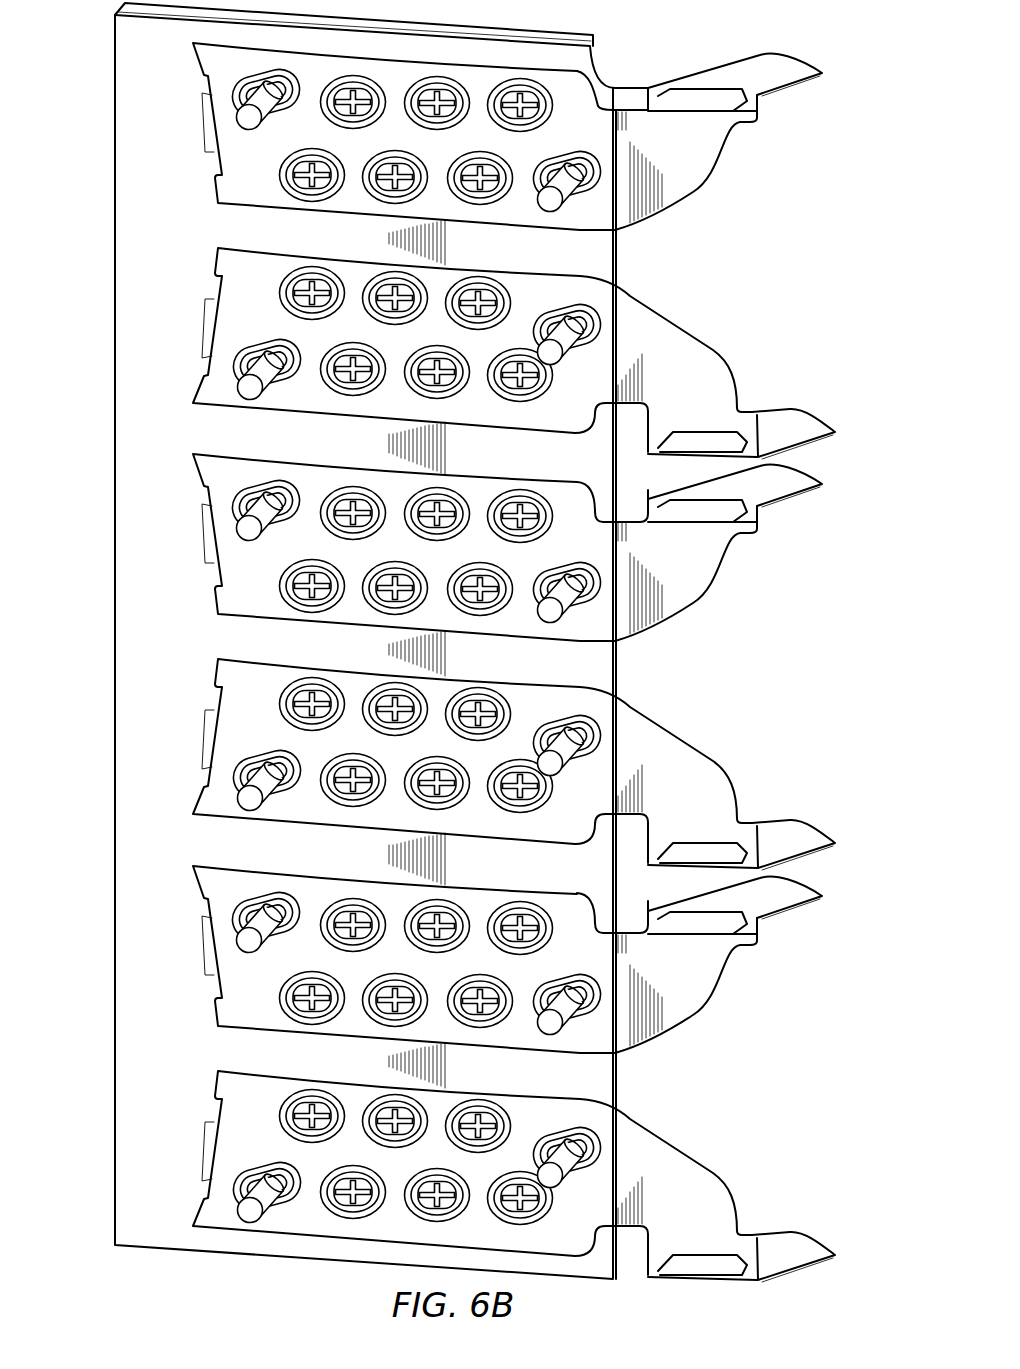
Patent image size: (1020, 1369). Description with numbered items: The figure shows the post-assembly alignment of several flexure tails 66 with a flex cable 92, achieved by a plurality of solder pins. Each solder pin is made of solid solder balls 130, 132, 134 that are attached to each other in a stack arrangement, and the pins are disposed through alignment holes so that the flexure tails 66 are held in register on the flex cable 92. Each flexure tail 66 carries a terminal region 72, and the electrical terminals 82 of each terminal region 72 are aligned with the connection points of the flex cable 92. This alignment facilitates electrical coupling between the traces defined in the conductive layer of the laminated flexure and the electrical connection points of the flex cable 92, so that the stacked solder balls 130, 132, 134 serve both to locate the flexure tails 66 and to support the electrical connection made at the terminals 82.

The flex cable 92 is at (118, 236).
The flexure tail 66 is at (773, 67).
The terminal region 72 is at (694, 164).
The electrical terminal 82 is at (303, 183).
The solid solder ball 130 is at (390, 644).
The solid solder ball 132 is at (240, 527).
The solid solder ball 134 is at (232, 532).